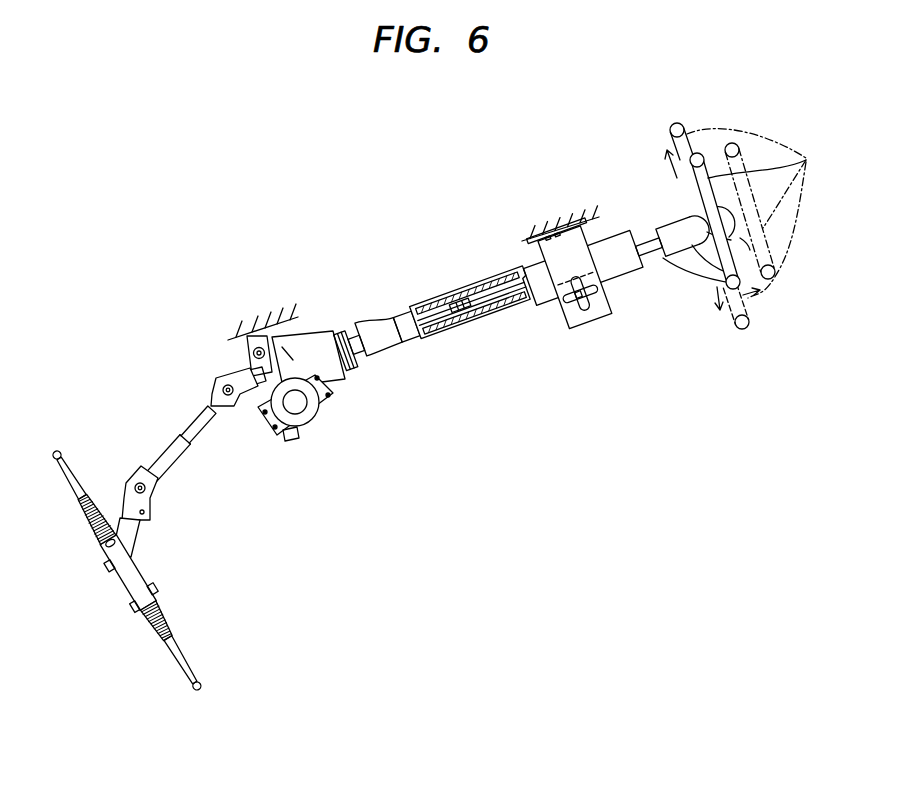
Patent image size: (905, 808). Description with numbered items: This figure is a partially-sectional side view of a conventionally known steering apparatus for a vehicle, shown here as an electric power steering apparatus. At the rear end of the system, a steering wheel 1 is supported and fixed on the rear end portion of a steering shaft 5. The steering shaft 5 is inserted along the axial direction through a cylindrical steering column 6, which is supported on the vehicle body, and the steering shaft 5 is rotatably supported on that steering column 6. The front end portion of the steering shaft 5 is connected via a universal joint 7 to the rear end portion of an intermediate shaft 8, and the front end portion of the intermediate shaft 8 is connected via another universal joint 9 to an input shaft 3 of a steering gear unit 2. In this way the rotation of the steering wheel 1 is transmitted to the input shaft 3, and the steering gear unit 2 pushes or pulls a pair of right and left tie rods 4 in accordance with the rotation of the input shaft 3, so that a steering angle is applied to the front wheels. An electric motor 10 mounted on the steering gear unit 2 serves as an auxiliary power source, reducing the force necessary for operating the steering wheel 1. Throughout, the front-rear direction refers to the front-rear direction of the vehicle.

The steering wheel 1 is at (742, 226).
The steering gear unit 2 is at (132, 583).
The input shaft 3 is at (133, 528).
The tie rods 4 is at (66, 476).
The steering shaft 5 is at (410, 327).
The steering column 6 is at (500, 322).
The universal joint 7 is at (209, 388).
The intermediate shaft 8 is at (173, 460).
The universal joint 9 is at (131, 485).
The electric motor 10 is at (293, 426).